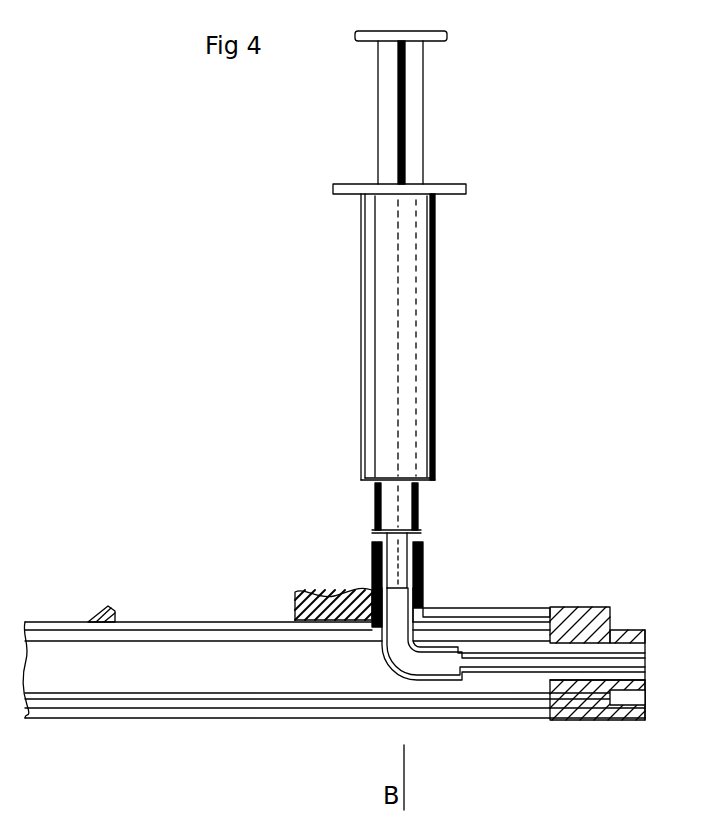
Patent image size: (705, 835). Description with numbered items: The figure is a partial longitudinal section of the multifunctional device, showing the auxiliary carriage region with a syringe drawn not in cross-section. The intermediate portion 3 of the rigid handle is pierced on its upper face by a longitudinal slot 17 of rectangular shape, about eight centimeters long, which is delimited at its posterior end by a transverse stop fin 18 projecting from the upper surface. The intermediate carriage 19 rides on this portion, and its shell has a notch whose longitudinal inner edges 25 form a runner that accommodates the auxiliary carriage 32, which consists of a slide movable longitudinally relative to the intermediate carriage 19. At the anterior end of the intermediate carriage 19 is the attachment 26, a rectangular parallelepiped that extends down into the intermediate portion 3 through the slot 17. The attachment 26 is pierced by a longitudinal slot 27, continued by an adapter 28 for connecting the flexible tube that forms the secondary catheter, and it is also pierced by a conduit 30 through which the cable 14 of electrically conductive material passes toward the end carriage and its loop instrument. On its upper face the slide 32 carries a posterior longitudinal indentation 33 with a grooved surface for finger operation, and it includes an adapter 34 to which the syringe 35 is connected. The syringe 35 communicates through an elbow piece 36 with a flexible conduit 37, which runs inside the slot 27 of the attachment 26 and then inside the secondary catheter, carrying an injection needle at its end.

The intermediate portion 3 is at (107, 717).
The cable 14 is at (208, 700).
The longitudinal slot 17 is at (170, 625).
The transverse stop fin 18 is at (100, 615).
The intermediate carriage 19 is at (533, 606).
The longitudinal inner edges 25 is at (478, 606).
The attachment 26 is at (596, 621).
The longitudinal slot 27 is at (562, 679).
The adapter 28 is at (620, 712).
The conduit 30 is at (597, 703).
The auxiliary carriage 32 is at (338, 553).
The posterior longitudinal indentation 33 is at (312, 593).
The adapter 34 is at (424, 566).
The syringe 35 is at (430, 281).
The elbow piece 36 is at (408, 656).
The flexible conduit 37 is at (632, 628).